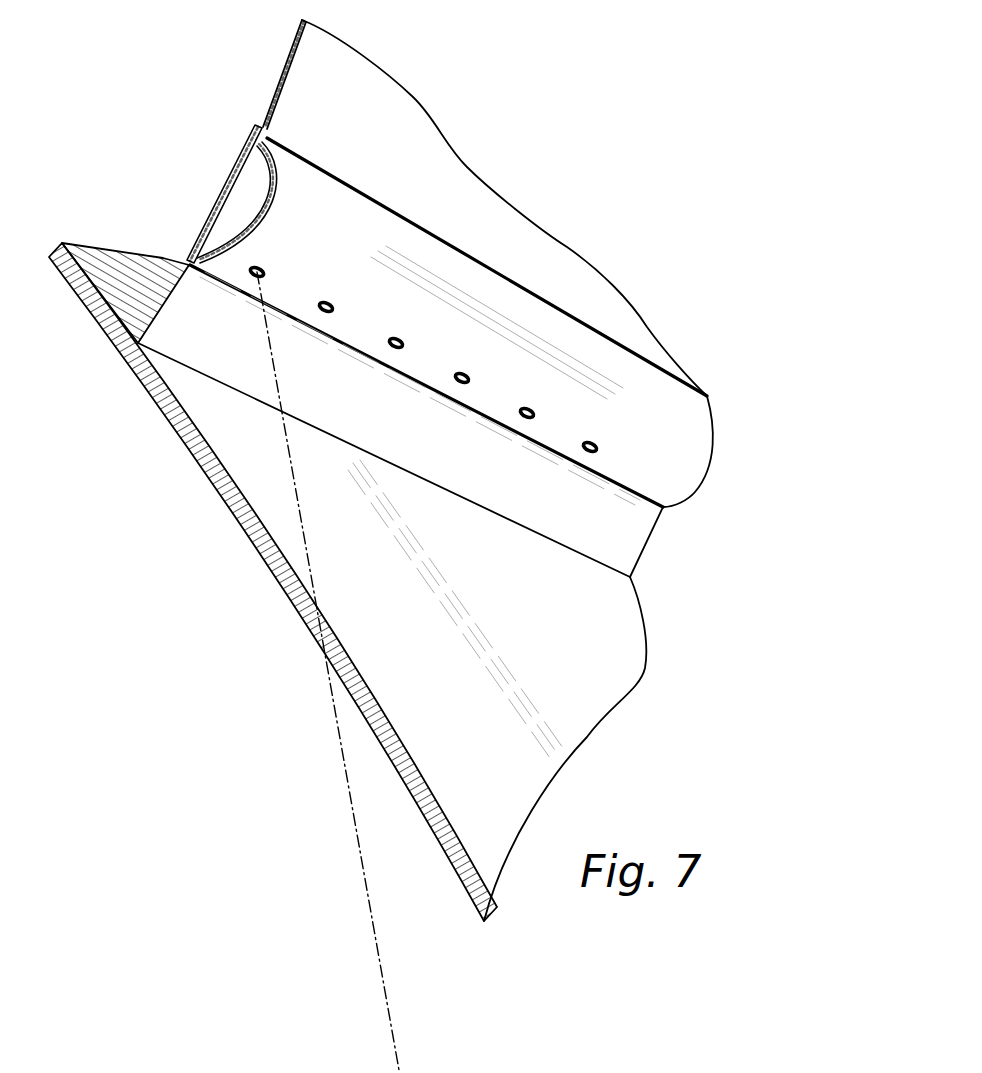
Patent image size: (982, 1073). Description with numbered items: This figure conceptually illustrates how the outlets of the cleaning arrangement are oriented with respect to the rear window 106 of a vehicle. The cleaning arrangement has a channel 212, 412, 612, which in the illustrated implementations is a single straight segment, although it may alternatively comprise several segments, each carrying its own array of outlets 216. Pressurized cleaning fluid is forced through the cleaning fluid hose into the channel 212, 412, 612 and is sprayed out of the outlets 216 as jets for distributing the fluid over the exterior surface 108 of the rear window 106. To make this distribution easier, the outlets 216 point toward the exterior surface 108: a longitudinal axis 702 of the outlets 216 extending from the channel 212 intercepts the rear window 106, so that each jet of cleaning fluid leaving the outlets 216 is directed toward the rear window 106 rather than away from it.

The rear window 106 is at (400, 545).
The exterior surface 108 is at (553, 728).
The channel 212 is at (451, 319).
The channel 412 is at (451, 319).
The cleaning arrangement channel 612 is at (463, 283).
The outlets 216 is at (252, 278).
The longitudinal axis 702 is at (358, 861).